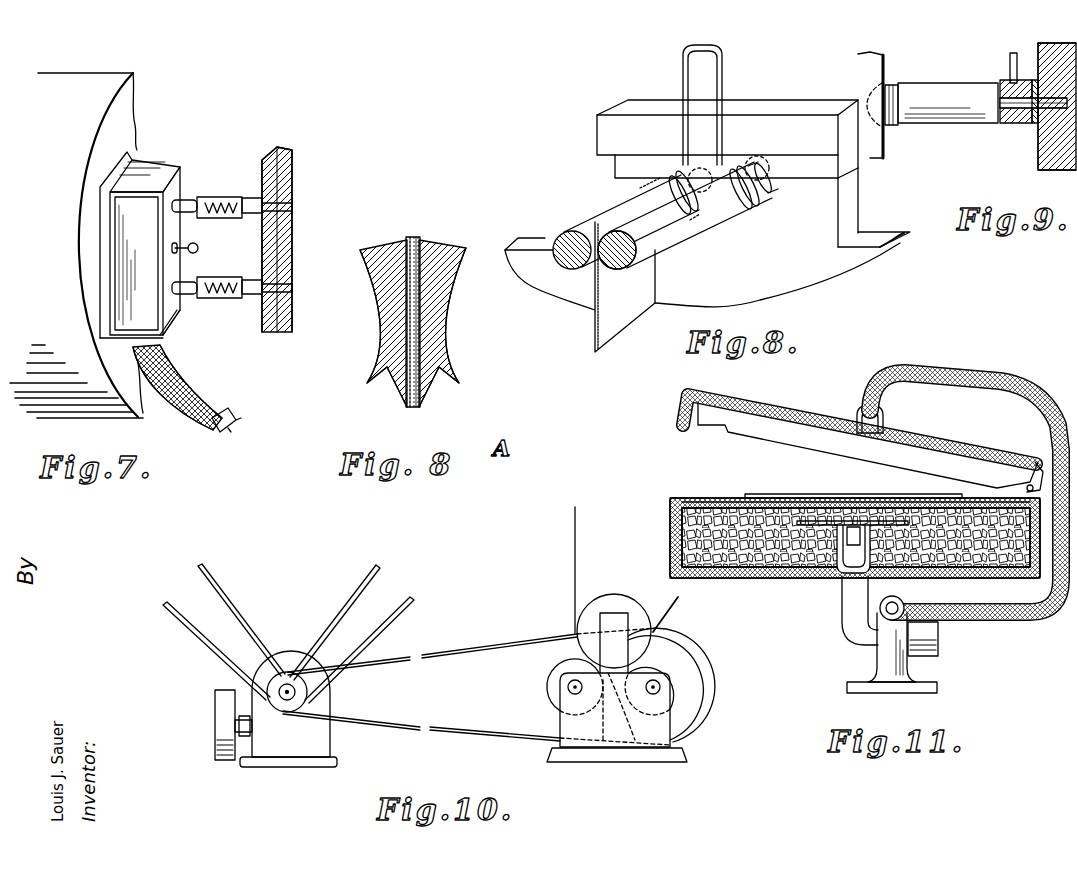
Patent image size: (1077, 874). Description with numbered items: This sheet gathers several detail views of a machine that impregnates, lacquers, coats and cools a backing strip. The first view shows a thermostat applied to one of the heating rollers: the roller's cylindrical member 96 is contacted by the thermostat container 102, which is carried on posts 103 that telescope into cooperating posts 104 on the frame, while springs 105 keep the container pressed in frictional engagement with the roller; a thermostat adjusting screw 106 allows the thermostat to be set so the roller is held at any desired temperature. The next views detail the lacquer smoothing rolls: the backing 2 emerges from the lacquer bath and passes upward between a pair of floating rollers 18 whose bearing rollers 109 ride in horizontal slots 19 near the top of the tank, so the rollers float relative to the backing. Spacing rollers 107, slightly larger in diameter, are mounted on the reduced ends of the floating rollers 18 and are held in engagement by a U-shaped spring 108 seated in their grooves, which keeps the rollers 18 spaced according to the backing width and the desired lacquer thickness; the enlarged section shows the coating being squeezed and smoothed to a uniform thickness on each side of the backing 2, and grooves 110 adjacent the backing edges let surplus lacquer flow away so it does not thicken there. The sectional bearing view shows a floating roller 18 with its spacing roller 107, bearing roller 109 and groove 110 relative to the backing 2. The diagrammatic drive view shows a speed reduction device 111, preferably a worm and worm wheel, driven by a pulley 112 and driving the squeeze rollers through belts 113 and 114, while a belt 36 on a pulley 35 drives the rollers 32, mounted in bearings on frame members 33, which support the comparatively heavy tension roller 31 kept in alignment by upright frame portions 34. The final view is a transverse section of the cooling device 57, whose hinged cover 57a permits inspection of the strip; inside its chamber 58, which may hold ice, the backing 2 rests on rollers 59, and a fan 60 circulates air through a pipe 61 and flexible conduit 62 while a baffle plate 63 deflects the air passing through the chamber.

In FIG. 8A, the backing 2 is at (418, 408).
In FIG. 8, the backing 2 is at (593, 318).
In FIG. 9, the backing 2 is at (885, 66).
In FIG. 10, the backing 2 is at (573, 569).
In FIG. 11, the backing 2 is at (842, 502).
In FIG. 8A, the floating rollers 18 is at (386, 347).
In FIG. 8, the floating rollers 18 is at (558, 266).
In FIG. 8, the horizontal slots 19 is at (848, 173).
In FIG. 10, the heavy roller 31 is at (618, 597).
In FIG. 10, the rollers 32 is at (547, 684).
In FIG. 10, the frame members 33 is at (567, 722).
In FIG. 10, the upright frame portions 34 is at (627, 613).
In FIG. 10, the pulley 35 is at (693, 665).
In FIG. 10, the belt 36 is at (462, 650).
In FIG. 11, the cooling device 57 is at (786, 585).
In FIG. 11, the cover 57a is at (805, 408).
In FIG. 11, the chamber 58 is at (808, 562).
In FIG. 11, the rollers 59 is at (783, 502).
In FIG. 11, the fan 60 is at (887, 649).
In FIG. 11, the pipe 61 is at (850, 614).
In FIG. 11, the flexible conduit 62 is at (1034, 415).
In FIG. 11, the baffle plate 63 is at (868, 523).
In FIG. 7, the cylindrical member 96 is at (122, 126).
In FIG. 7, the thermostat container 102 is at (147, 170).
In FIG. 7, the posts 103 is at (178, 200).
In FIG. 7, the cooperating posts 104 is at (241, 196).
In FIG. 7, the springs 105 is at (212, 197).
In FIG. 7, the thermostat adjusting screw 106 is at (191, 245).
In FIG. 8, the spacing rollers 107 is at (673, 168).
In FIG. 9, the spacing rollers 107 is at (1003, 127).
In FIG. 8, the U-shaped spring 108 is at (722, 94).
In FIG. 8, the bearing rollers 109 is at (758, 167).
In FIG. 9, the bearing rollers 109 is at (1037, 127).
In FIG. 8, the grooves 110 is at (640, 188).
In FIG. 9, the grooves 110 is at (893, 127).
In FIG. 10, the speed reduction device 111 is at (320, 741).
In FIG. 10, the pulley 112 is at (213, 752).
In FIG. 10, the belt 113 is at (230, 601).
In FIG. 10, the belt 114 is at (366, 576).